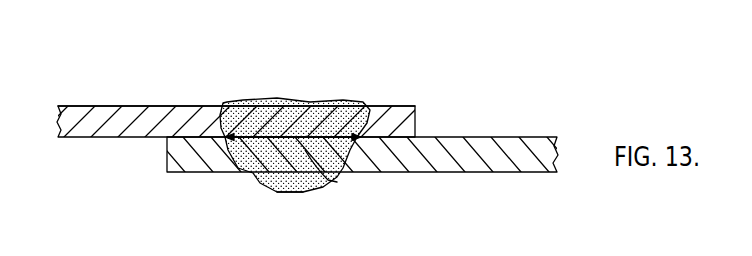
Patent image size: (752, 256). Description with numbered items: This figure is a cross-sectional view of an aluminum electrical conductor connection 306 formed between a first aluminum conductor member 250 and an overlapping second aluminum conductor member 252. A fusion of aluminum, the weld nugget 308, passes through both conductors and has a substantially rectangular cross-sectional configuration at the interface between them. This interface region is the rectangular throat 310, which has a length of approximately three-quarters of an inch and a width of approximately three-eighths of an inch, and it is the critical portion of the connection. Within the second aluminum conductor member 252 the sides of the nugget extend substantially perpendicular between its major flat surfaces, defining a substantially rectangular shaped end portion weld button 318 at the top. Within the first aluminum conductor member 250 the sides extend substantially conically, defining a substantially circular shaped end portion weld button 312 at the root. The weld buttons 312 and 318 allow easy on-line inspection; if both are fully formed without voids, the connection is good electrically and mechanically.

The first aluminum conductor member 250 is at (518, 120).
The second aluminum conductor member 252 is at (133, 109).
The electrical conductor connection 306 is at (195, 92).
The weld nugget 308 is at (337, 182).
The rectangular throat 310 is at (275, 137).
The circular shaped end portion weld button 312 is at (295, 190).
The rectangular shaped end portion weld button 318 is at (287, 100).